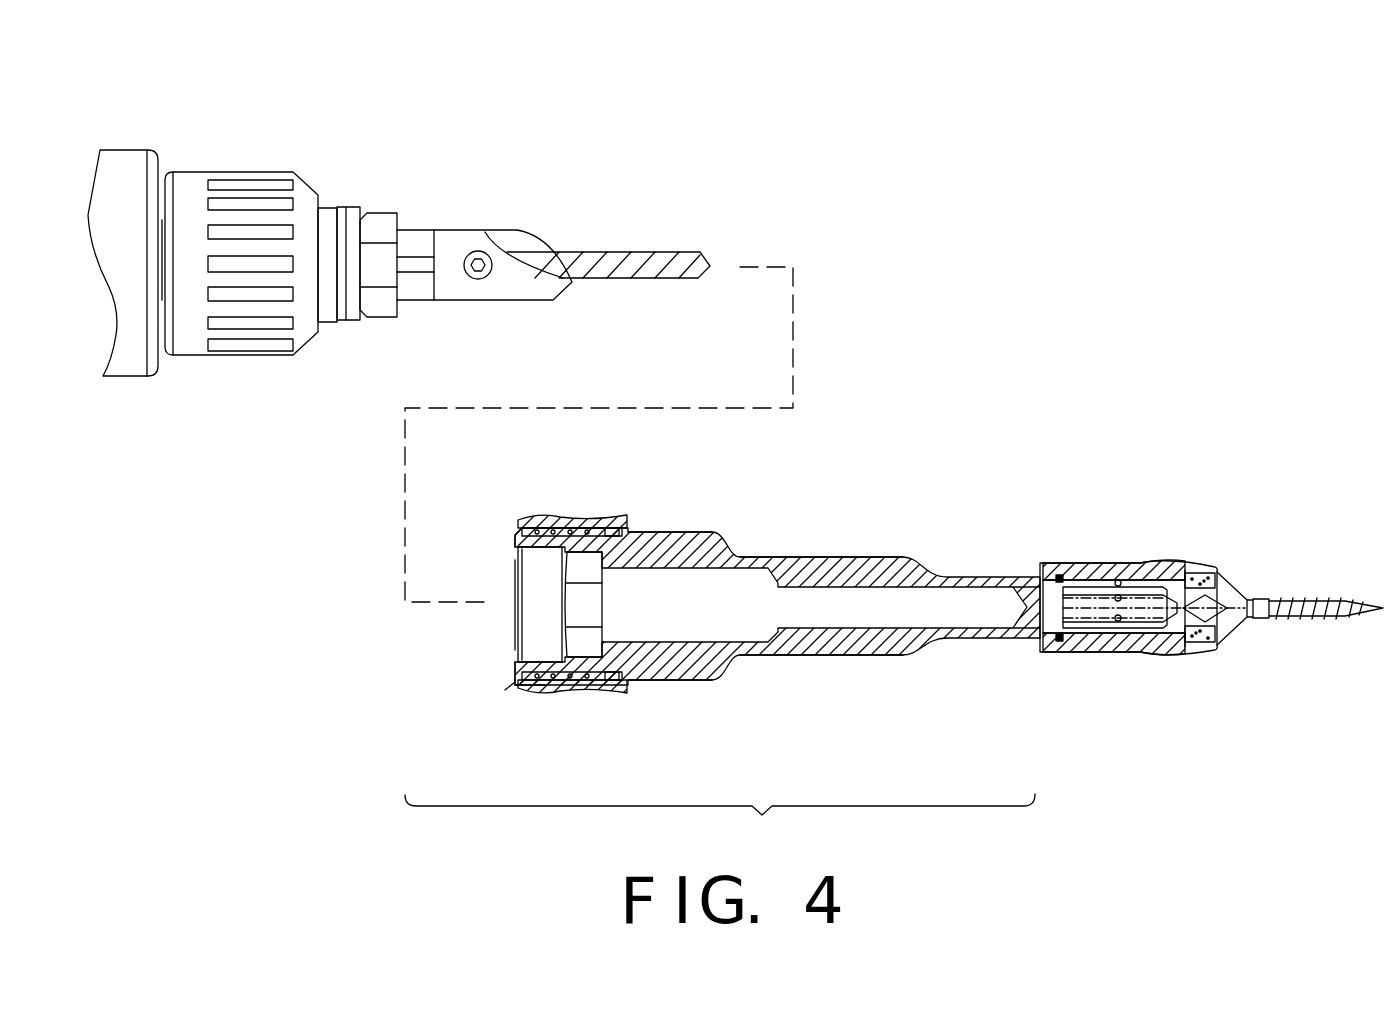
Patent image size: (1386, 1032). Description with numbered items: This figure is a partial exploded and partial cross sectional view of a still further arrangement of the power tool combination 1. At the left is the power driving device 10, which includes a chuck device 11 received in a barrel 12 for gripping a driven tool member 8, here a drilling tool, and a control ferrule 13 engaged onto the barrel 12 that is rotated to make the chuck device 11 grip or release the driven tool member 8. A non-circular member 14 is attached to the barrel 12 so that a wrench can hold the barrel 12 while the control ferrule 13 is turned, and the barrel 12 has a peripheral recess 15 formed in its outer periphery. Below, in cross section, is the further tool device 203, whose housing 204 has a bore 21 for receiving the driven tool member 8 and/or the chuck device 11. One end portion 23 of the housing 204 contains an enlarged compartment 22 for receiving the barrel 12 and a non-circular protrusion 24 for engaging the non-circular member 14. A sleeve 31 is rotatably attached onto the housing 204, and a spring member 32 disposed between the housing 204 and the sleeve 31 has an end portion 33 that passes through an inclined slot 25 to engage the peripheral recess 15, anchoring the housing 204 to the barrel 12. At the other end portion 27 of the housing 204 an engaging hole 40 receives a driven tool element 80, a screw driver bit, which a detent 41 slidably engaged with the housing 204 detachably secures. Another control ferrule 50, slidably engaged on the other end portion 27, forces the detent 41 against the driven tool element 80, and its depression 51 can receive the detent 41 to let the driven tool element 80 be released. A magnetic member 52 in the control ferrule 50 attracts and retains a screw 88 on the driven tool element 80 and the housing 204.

The power driving device 10 is at (118, 135).
The control ferrule 13 is at (190, 185).
The peripheral recess 15 is at (338, 207).
The barrel 12 is at (330, 325).
The non-circular member 14 is at (383, 318).
The chuck device 11 is at (413, 240).
The power tool combination 1 is at (645, 228).
The driven tool member 8 is at (628, 257).
The further tool device 203 is at (891, 608).
The sleeve 31 is at (613, 520).
The spring member 32 is at (568, 520).
The enlarged compartment 22 is at (530, 623).
The inclined slot 25 is at (530, 525).
The end portion 33 is at (513, 563).
The one end portion 23 is at (527, 673).
The non-circular protrusion 24 is at (585, 643).
The housing 204 is at (778, 643).
The bore 21 is at (885, 608).
The other end portion 27 is at (1034, 628).
The detent 41 is at (1118, 580).
The engaging hole 40 is at (1097, 627).
The control ferrule 50 is at (1138, 572).
The depression 51 is at (1165, 565).
The magnetic member 52 is at (1208, 573).
The driven tool element 80 is at (1177, 613).
The screw 88 is at (1307, 623).